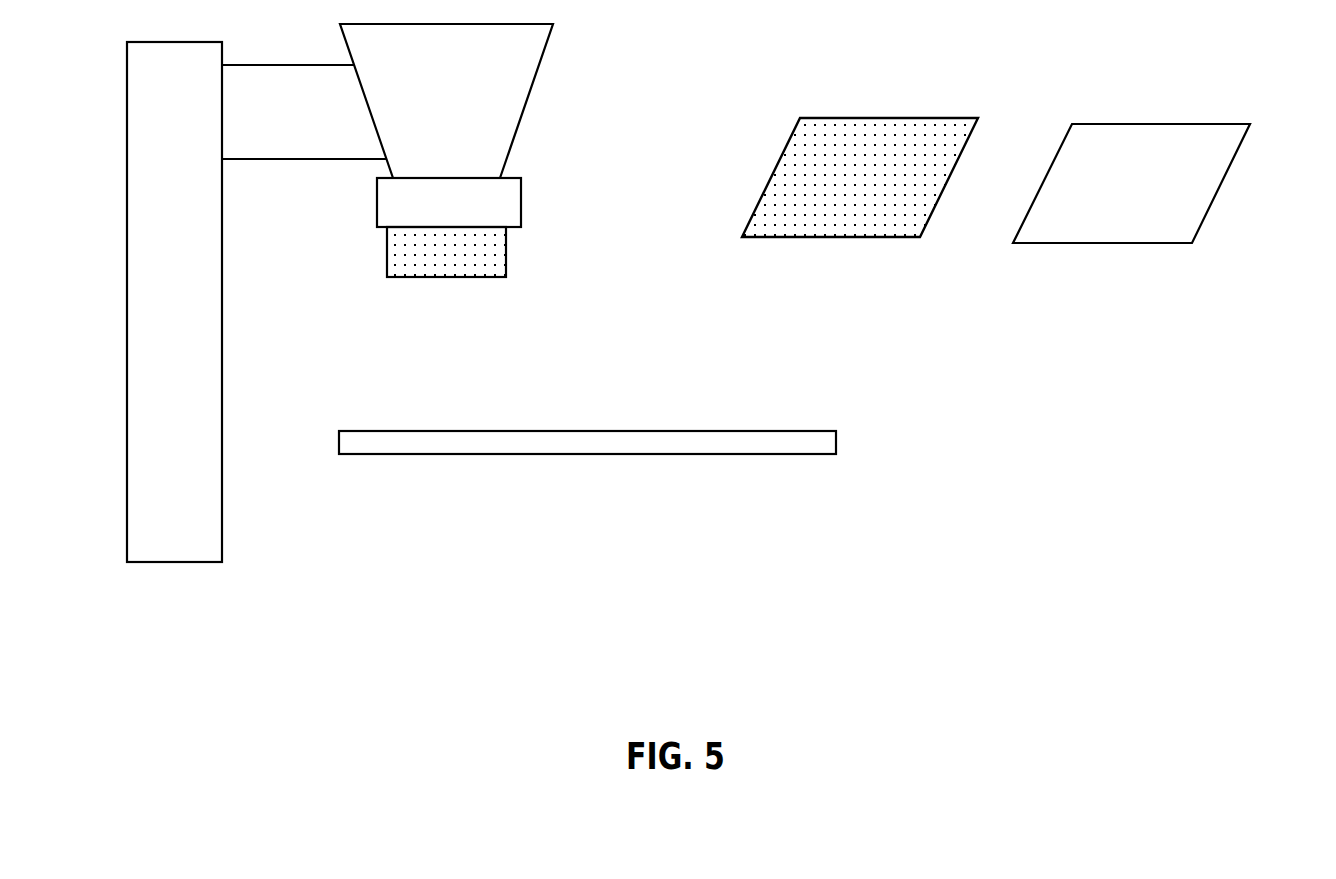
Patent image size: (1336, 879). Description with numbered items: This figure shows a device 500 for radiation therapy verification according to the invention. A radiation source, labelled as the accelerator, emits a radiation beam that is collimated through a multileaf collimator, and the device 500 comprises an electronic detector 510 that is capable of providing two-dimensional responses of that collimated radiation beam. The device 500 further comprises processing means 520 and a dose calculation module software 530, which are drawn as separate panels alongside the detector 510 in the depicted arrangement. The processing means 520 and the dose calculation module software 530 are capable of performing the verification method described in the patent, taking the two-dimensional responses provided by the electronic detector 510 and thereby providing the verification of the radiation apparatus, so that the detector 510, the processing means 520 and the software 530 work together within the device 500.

The device 500 is at (727, 326).
The electronic detector 510 is at (506, 266).
The processing means 520 is at (940, 118).
The dose calculation module software 530 is at (1193, 124).